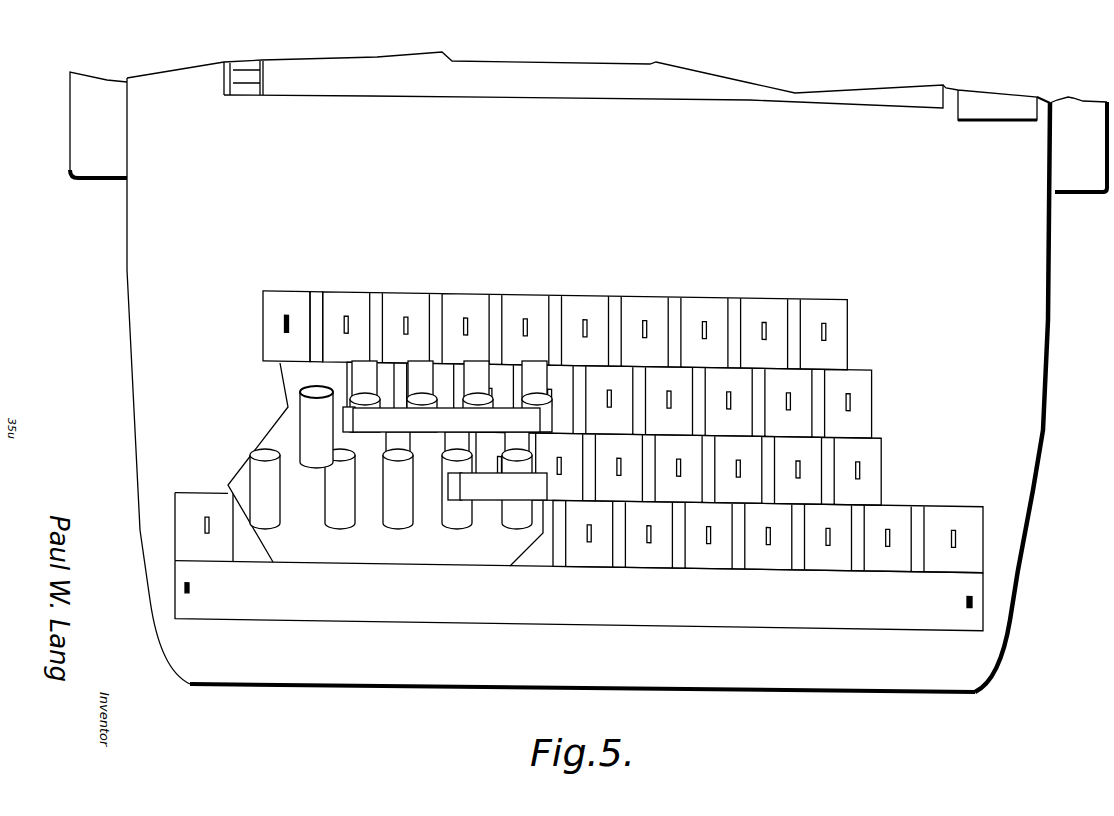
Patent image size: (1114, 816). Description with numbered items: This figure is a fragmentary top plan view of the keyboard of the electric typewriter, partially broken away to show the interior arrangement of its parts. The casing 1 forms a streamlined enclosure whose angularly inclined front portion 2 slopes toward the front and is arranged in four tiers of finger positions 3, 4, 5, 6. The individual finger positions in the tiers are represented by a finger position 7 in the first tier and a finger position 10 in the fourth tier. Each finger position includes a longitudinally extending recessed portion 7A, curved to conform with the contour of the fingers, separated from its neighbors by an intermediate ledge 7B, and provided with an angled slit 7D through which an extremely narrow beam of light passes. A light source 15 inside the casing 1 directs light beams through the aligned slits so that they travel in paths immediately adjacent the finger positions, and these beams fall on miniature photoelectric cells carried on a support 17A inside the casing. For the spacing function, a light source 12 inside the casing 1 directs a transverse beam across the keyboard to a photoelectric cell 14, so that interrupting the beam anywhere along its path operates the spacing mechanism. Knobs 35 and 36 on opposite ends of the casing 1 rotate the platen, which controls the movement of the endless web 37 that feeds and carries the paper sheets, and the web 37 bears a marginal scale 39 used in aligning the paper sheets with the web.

The casing 1 is at (1037, 319).
The angularly inclined front portion 2 is at (928, 369).
The tier of finger positions 3 is at (822, 326).
The tier of finger positions 4 is at (848, 377).
The tier of finger positions 5 is at (860, 462).
The tier of finger positions 6 is at (963, 526).
The finger position 7 is at (258, 331).
The recessed portion 7A is at (263, 331).
The intermediate ledge 7B is at (313, 342).
The slit 7D is at (295, 308).
The finger position 10 is at (200, 532).
The light source 12 is at (178, 591).
The photoelectric cell 14 is at (975, 588).
The light source 15 is at (473, 414).
The support 17A is at (303, 382).
The knob 35 is at (85, 143).
The knob 36 is at (1070, 183).
The web 37 is at (873, 95).
The marginal scale 39 is at (243, 67).